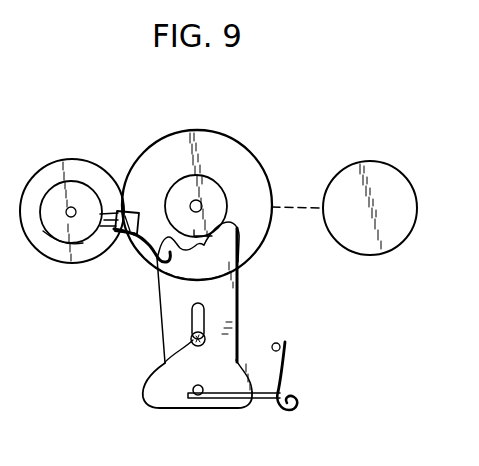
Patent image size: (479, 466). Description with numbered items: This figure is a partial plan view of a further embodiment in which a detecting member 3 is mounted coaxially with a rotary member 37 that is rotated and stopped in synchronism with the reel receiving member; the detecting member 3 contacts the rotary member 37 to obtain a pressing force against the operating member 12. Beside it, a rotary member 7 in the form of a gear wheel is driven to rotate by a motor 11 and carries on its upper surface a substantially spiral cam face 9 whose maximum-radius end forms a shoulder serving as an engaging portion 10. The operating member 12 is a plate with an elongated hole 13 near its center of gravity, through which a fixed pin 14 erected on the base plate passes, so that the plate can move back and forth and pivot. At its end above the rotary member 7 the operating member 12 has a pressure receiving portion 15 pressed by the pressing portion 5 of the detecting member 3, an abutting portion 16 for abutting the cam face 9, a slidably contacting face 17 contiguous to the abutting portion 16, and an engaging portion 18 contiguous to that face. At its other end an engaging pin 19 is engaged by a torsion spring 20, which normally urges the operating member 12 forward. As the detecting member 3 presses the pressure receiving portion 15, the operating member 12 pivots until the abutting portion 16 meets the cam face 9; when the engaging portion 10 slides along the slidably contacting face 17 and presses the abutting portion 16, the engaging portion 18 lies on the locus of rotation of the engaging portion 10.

The rotary member 37 is at (76, 159).
The detecting member 3 is at (91, 188).
The pressing portion 5 is at (136, 211).
The cam face 9 is at (183, 177).
The rotary member 7 is at (226, 134).
The motor 11 is at (369, 162).
The abutting portion 16 is at (238, 226).
The engaging portion 10 is at (237, 267).
The operating member 12 is at (172, 336).
The elongated hole 13 is at (192, 318).
The fixed pin 14 is at (170, 361).
The engaging pin 19 is at (200, 385).
The torsion spring 20 is at (288, 358).
The pressure receiving portion 15 is at (120, 245).
The slidably contacting face 17 is at (150, 240).
The engaging portion 18 is at (145, 265).